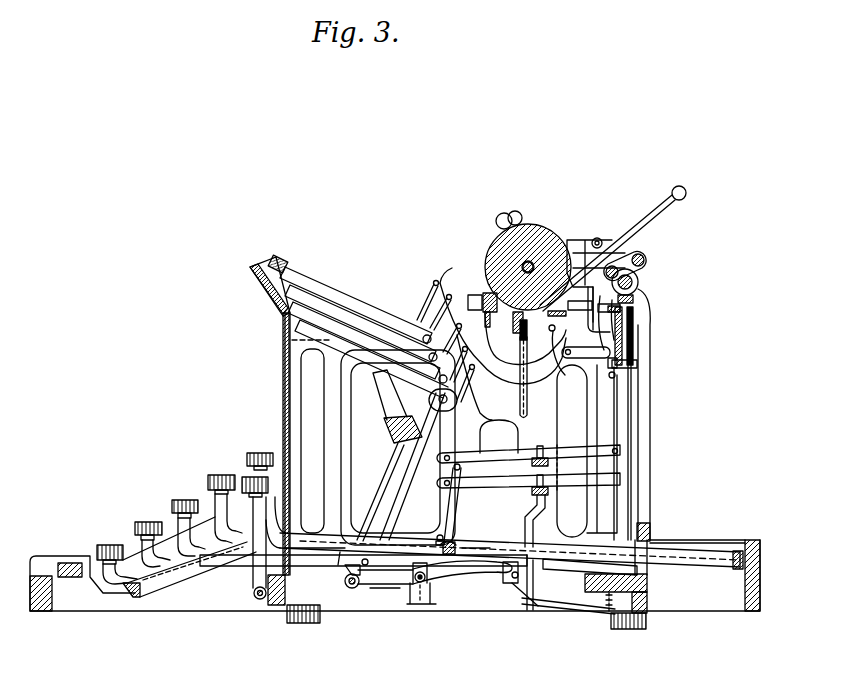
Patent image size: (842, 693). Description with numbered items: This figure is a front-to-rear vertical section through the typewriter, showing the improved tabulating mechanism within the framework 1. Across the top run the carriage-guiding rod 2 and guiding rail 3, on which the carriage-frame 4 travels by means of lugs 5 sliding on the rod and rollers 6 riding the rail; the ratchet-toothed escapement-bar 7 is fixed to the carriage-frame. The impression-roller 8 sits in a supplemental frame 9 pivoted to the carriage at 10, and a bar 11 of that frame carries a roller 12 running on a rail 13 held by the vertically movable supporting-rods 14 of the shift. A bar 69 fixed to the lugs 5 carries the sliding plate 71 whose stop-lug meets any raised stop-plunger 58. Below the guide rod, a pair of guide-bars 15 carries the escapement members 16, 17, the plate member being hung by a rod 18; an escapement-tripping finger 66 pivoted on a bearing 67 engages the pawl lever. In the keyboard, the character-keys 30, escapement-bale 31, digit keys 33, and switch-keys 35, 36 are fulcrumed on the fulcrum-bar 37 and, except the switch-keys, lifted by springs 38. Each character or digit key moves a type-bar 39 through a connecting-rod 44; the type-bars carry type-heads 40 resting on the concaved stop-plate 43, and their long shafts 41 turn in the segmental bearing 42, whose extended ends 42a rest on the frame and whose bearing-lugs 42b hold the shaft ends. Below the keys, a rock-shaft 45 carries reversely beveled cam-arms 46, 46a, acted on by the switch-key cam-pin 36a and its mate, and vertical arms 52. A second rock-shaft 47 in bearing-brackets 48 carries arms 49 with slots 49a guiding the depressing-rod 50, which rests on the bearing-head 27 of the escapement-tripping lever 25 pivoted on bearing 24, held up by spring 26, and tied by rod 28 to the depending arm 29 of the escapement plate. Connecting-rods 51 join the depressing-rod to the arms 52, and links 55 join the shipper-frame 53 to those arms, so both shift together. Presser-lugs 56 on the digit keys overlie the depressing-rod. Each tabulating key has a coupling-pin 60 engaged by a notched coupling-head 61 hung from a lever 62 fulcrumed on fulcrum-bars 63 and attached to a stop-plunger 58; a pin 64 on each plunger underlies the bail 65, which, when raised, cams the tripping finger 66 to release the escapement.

The framework 1 is at (632, 503).
The carriage-guiding rod 2 is at (653, 302).
The guiding bar or rail 3 is at (440, 343).
The carriage-frame 4 is at (586, 283).
The lugs 5 is at (639, 282).
The rollers 6 is at (474, 295).
The escapement-bar 7 is at (553, 316).
The impression-roller 8 is at (535, 228).
The supplemental frame 9 is at (620, 252).
The pivot 10 is at (647, 262).
The bar 11 is at (512, 322).
The roller 12 is at (519, 335).
The rail 13 is at (520, 352).
The supporting-rods 14 is at (528, 407).
The guide-bars 15 is at (635, 320).
The escapement member 16 is at (580, 298).
The escapement member 17 is at (595, 311).
The rod 18 is at (609, 299).
The bearing 24 is at (630, 629).
The escapement-tripping lever 25 is at (592, 610).
The spring 26 is at (608, 614).
The bearing-head 27 is at (514, 586).
The rod 28 is at (553, 452).
The depending arm 29 is at (566, 347).
The character-keys 30 is at (132, 530).
The escapement-bale 31 is at (70, 556).
The digit keys 33 is at (222, 480).
The switch-key 35 is at (256, 452).
The switch-key 36 is at (255, 566).
The cam-pin 36a is at (350, 588).
The fulcrum-bar 37 is at (737, 551).
The springs 38 is at (649, 580).
The type-bars 39 is at (362, 320).
The type-heads 40 is at (286, 274).
The shafts 41 is at (426, 318).
The segmental bearing 42 is at (392, 422).
The extended ends 42a is at (400, 396).
The bearing-lugs 42b is at (462, 390).
The stop-plate 43 is at (288, 325).
The connecting-rod 44 is at (379, 486).
The rock-shaft 45 is at (352, 603).
The cam-arm 46 is at (347, 560).
The cam-arm 46a is at (374, 582).
The rock-shaft 47 is at (410, 600).
The bearing-brackets 48 is at (421, 608).
The arms 49 is at (468, 580).
The slots 49a is at (508, 590).
The depressing-rod 50 is at (510, 586).
The connecting-rods 51 is at (395, 602).
The arms 52 is at (362, 570).
The shipper-frame 53 is at (452, 535).
The links 55 is at (568, 573).
The presser-lugs 56 is at (500, 583).
The stop-plungers 58 is at (632, 410).
The coupling-pin 60 is at (438, 536).
The coupling-head 61 is at (458, 548).
The levers 62 is at (478, 465).
The fulcrum-bars 63 is at (532, 462).
The pin 64 is at (571, 391).
The bail 65 is at (595, 362).
The escapement-tripping finger 66 is at (590, 356).
The bearing 67 is at (609, 378).
The bar 69 is at (634, 301).
The plate 71 is at (635, 312).